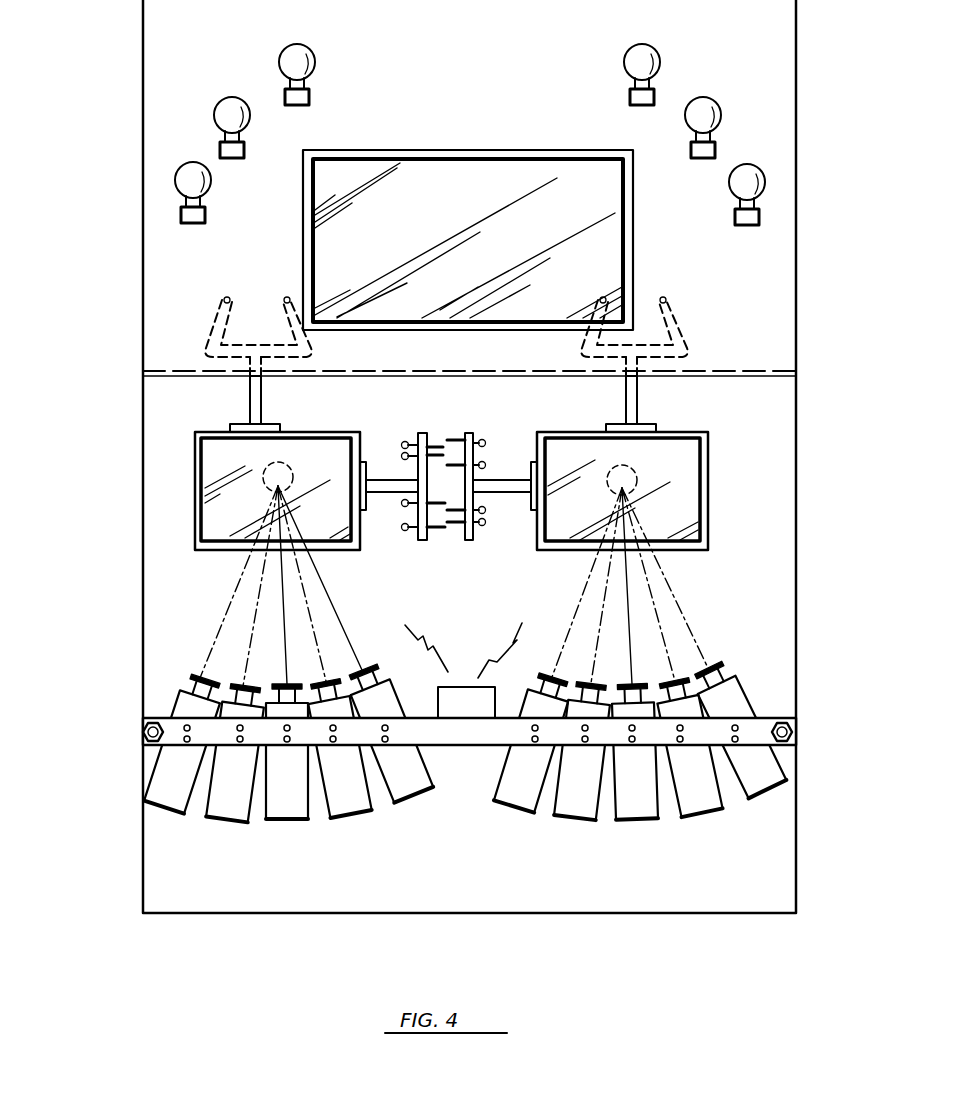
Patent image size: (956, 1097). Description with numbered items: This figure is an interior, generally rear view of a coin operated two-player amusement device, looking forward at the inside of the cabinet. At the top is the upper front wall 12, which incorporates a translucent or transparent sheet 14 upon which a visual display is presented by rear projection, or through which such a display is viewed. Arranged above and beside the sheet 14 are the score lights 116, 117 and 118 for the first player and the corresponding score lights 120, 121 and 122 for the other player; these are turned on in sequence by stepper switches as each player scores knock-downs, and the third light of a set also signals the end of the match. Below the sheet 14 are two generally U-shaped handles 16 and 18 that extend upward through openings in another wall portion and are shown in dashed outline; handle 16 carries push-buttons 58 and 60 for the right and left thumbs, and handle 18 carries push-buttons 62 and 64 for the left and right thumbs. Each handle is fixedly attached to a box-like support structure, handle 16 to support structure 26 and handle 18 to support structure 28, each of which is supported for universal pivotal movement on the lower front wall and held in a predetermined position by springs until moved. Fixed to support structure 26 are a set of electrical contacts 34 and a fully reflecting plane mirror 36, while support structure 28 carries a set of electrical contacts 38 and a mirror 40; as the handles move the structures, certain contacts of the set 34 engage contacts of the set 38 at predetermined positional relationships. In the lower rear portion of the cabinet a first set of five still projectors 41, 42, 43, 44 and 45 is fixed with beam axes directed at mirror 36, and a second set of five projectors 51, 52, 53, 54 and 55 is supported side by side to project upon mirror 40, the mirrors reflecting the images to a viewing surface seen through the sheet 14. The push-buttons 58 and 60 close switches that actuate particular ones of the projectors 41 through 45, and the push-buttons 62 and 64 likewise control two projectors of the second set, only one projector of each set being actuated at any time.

The upper front wall 12 is at (783, 314).
The translucent or transparent sheet 14 is at (449, 170).
The U-shaped handle 16 is at (587, 349).
The U-shaped handle 18 is at (297, 353).
The box-like support structure 26 is at (687, 511).
The box-like support structure 28 is at (236, 511).
The set of electrical contacts 34 is at (458, 542).
The plane mirror 36 is at (660, 523).
The set of electrical contacts 38 is at (436, 540).
The mirror 40 is at (320, 518).
The still projector 41 is at (767, 782).
The still projector 42 is at (700, 800).
The still projector 43 is at (637, 815).
The still projector 44 is at (577, 808).
The still projector 45 is at (515, 798).
The projector 51 is at (410, 783).
The projector 52 is at (352, 802).
The projector 53 is at (288, 808).
The projector 54 is at (225, 810).
The projector 55 is at (165, 792).
The push-button 58 is at (663, 298).
The push-button 60 is at (604, 298).
The push-button 62 is at (288, 298).
The push-button 64 is at (227, 298).
The score light 116 is at (765, 182).
The score light 117 is at (710, 100).
The score light 118 is at (633, 55).
The score light 120 is at (184, 180).
The score light 121 is at (228, 113).
The score light 122 is at (304, 60).